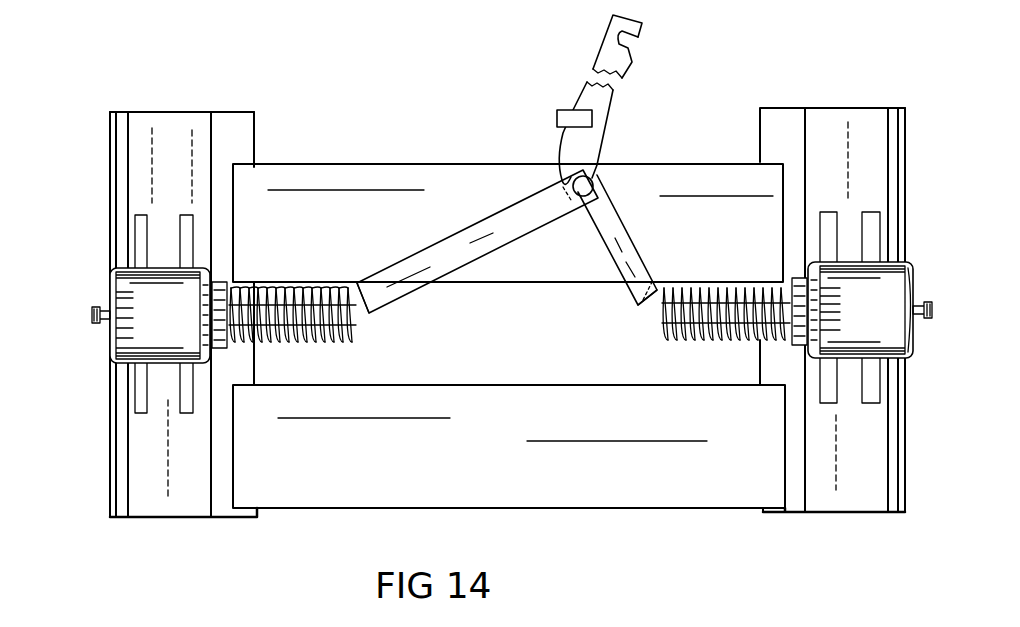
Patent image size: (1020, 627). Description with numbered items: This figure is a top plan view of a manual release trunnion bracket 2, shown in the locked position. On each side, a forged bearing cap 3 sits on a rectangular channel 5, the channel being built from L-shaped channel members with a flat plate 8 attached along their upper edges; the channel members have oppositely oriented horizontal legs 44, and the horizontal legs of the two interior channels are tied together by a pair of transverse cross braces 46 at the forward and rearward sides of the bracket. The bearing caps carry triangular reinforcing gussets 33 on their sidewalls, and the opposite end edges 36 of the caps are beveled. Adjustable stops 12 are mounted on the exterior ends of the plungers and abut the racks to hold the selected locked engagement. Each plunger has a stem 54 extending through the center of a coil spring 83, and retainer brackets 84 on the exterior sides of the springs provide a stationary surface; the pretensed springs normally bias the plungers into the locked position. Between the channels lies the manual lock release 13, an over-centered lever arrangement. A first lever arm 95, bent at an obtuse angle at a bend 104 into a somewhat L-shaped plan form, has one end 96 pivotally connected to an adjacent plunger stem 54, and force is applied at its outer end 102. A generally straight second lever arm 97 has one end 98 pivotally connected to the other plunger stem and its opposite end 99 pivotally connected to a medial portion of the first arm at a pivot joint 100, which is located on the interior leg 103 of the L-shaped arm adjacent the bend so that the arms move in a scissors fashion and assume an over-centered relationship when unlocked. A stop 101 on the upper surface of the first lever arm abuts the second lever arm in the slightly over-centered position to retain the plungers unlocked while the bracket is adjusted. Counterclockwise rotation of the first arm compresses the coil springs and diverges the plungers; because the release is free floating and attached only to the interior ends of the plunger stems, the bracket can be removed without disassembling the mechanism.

The trunnion bracket 2 is at (181, 111).
The bearing cap 3 is at (132, 283).
The channel 5 is at (176, 519).
The flat plate 8 is at (143, 450).
The adjustable stop 12 is at (92, 315).
The manual lock release 13 is at (524, 188).
The reinforcing gusset 33 is at (873, 385).
The end edge 36 is at (912, 350).
The horizontal leg 44 is at (252, 134).
The transverse cross brace 46 is at (692, 495).
The plunger stem 54 is at (307, 335).
The coil spring 83 is at (302, 287).
The retainer bracket 84 is at (797, 277).
The first lever arm 95 is at (616, 54).
The end of first lever arm 96 is at (655, 310).
The second lever arm 97 is at (428, 260).
The end of second lever arm 98 is at (368, 312).
The opposite end of second lever arm 99 is at (477, 265).
The pivot joint 100 is at (583, 186).
The stop 101 is at (558, 113).
The outer end of lever arm 102 is at (623, 65).
The interior leg 103 is at (635, 260).
The bend 104 is at (563, 142).